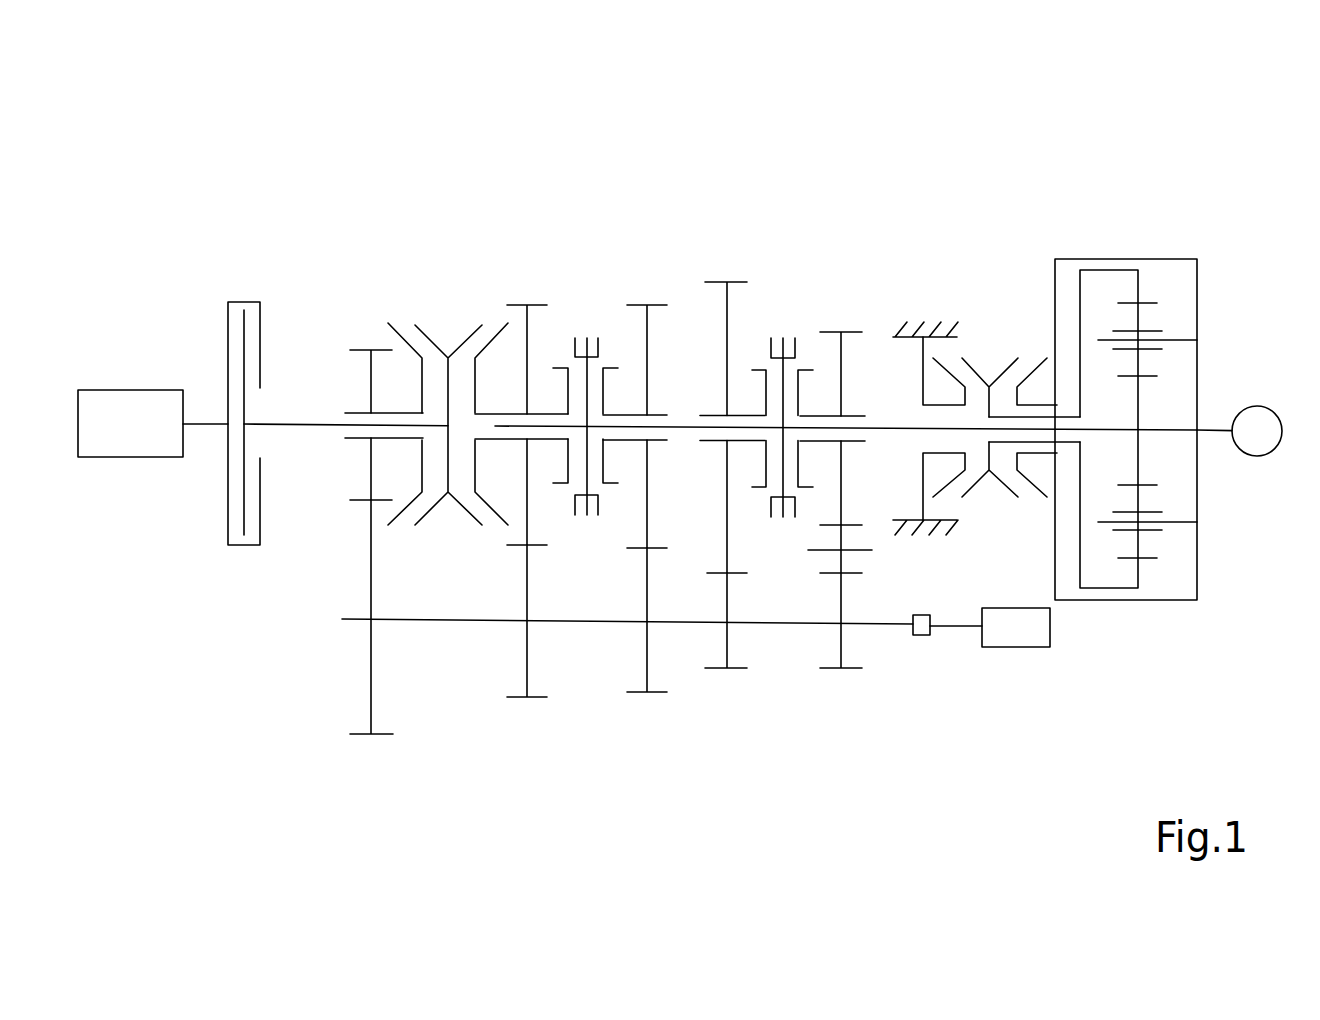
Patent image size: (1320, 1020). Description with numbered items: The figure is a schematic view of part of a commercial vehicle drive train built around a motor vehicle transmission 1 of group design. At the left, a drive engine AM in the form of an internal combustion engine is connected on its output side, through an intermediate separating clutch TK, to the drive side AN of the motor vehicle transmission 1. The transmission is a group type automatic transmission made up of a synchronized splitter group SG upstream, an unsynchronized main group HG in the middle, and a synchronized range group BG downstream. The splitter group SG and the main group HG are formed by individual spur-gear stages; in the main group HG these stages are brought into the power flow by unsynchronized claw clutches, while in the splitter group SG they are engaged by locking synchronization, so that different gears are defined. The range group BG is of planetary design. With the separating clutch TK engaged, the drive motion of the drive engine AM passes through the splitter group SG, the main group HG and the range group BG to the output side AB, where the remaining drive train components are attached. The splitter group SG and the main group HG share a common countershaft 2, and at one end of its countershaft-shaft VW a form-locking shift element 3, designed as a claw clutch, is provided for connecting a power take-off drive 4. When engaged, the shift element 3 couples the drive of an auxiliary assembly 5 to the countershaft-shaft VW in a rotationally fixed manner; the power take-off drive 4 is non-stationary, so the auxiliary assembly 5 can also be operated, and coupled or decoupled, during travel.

The motor vehicle transmission 1 is at (855, 173).
The countershaft 2 is at (325, 622).
The form-locking shift element 3 is at (928, 633).
The power take-off drive 4 is at (957, 670).
The auxiliary assembly 5 is at (1037, 632).
The drive engine AM is at (125, 390).
The separating clutch TK is at (232, 302).
The drive side AN is at (343, 388).
The splitter group SG is at (478, 238).
The main group HG is at (635, 730).
The countershaft-shaft VW is at (353, 623).
The range group BG is at (1113, 237).
The output side AB is at (1257, 417).